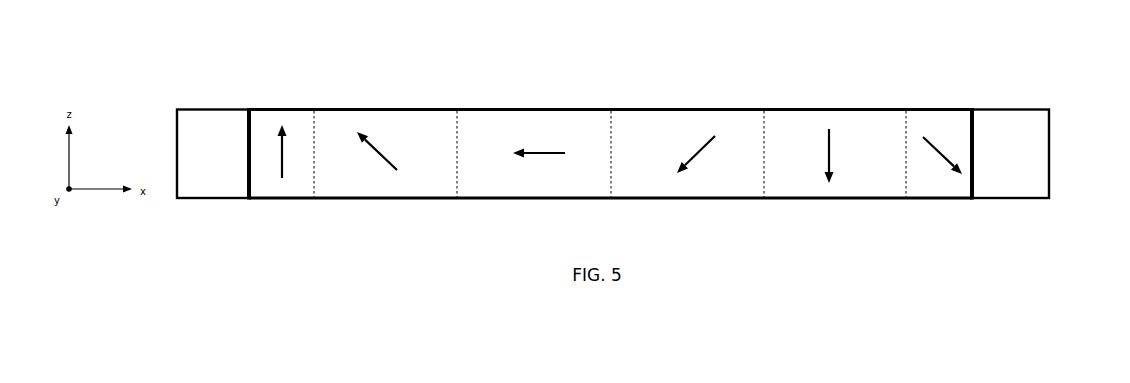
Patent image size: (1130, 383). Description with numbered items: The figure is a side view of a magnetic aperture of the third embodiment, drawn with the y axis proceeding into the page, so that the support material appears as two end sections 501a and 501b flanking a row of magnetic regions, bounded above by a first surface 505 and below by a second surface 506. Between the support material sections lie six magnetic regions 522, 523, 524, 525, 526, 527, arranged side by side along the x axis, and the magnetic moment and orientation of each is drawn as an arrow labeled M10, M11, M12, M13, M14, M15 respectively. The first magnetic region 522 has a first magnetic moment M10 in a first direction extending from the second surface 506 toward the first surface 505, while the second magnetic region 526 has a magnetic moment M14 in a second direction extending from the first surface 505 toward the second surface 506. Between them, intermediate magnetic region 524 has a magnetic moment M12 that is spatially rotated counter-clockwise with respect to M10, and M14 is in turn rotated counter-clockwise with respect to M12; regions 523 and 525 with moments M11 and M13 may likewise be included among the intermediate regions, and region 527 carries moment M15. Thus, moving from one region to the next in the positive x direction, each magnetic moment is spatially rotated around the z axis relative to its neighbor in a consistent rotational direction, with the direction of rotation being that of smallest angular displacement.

The support material 501a is at (188, 132).
The support material 501b is at (1010, 132).
The first surface 505 is at (212, 106).
The second surface 506 is at (217, 202).
The first magnetic region 522 is at (267, 187).
The magnetic region 523 is at (337, 188).
The intermediate magnetic region 524 is at (478, 187).
The magnetic region 525 is at (633, 187).
The second magnetic region 526 is at (782, 187).
The magnetic region 527 is at (925, 188).
The first magnetic moment M10 is at (287, 152).
The magnetic moment M11 is at (385, 152).
The intermediate magnetic moment M12 is at (545, 155).
The magnetic moment M13 is at (700, 157).
The second magnetic moment M14 is at (832, 148).
The magnetic moment M15 is at (927, 145).